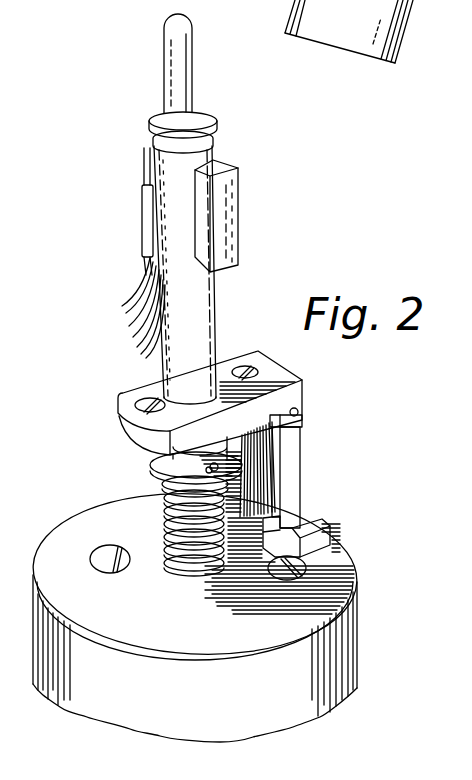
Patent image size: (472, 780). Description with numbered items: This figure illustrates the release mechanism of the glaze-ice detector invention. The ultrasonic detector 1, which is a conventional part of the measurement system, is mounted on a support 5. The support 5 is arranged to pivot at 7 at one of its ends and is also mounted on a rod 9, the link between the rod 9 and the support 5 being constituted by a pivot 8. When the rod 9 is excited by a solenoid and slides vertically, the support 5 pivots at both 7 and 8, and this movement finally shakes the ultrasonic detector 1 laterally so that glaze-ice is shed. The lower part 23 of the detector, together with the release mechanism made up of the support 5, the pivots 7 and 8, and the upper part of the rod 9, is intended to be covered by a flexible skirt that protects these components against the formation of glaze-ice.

The ultrasonic detector 1 is at (213, 206).
The lower part of the detector 23 is at (218, 287).
The support 5 is at (178, 438).
The pivot 7 is at (299, 415).
The pivot 8 is at (172, 467).
The rod 9 is at (183, 568).